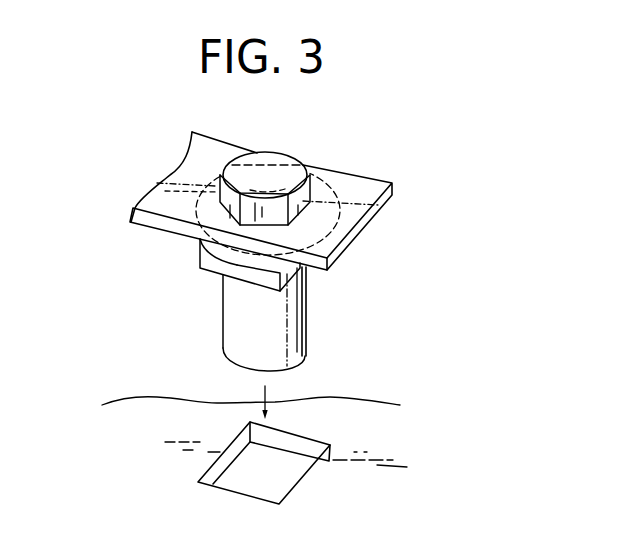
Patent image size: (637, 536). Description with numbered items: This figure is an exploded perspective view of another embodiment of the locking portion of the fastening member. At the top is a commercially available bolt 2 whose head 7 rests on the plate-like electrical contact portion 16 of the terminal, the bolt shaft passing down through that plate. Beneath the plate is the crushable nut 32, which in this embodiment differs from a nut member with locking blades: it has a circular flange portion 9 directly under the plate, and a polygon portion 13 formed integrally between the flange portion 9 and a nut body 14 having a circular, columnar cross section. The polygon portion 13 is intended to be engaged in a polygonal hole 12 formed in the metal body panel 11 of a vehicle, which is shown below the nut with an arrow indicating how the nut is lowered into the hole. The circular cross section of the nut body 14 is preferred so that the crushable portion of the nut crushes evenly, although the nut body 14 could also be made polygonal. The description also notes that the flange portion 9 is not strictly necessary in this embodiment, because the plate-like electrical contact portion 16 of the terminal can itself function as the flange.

The bolt 2 is at (273, 152).
The head 7 is at (289, 155).
The plate-like electrical contact portion 16 is at (367, 168).
The flange portion 9 is at (210, 274).
The polygon portion 13 is at (249, 290).
The crushable nut 32 is at (309, 300).
The nut body 14 is at (285, 327).
The metal body panel 11 is at (353, 438).
The polygonal hole 12 is at (283, 481).